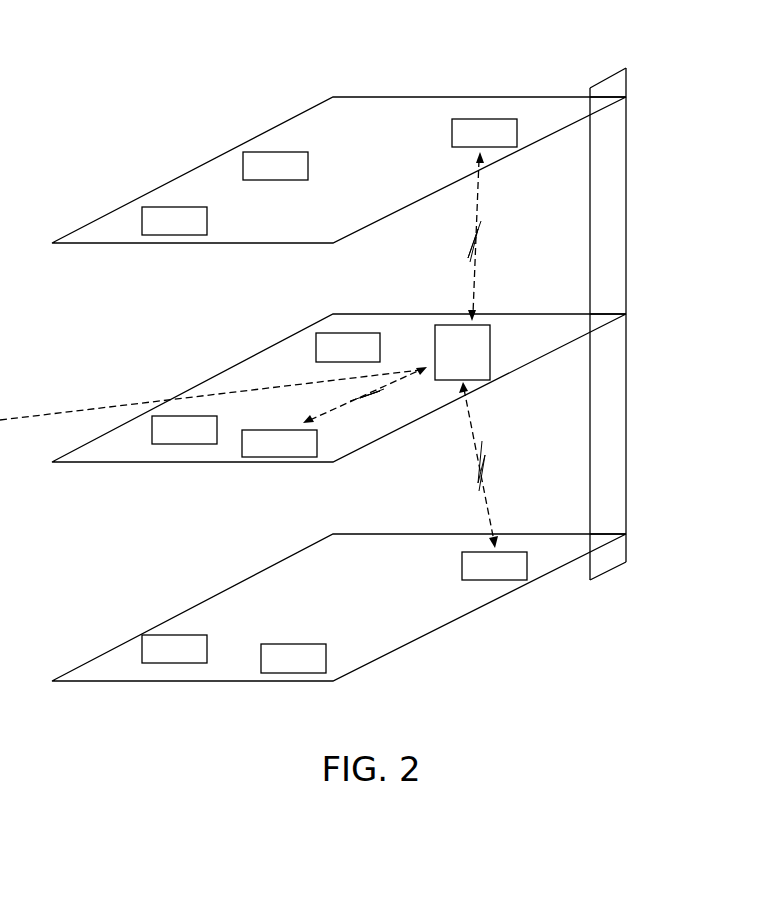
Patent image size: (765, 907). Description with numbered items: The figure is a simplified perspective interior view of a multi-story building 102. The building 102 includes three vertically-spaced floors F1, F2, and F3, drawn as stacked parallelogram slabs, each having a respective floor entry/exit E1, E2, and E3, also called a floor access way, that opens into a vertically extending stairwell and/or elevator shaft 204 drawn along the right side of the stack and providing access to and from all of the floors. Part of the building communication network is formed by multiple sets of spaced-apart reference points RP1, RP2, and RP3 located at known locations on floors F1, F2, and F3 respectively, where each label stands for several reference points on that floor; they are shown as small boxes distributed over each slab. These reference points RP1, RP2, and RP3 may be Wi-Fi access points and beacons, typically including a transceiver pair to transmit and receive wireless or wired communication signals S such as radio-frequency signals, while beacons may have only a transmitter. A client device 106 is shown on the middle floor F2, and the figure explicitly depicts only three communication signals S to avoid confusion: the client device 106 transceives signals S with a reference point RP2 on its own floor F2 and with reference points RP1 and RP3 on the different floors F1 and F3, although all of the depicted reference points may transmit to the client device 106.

The multi-story building 102 is at (313, 34).
The stairwell and/or elevator shaft 204 is at (607, 78).
The client device 106 is at (480, 374).
The floor entry/exit E1 is at (596, 541).
The floor entry/exit E2 is at (596, 320).
The floor entry/exit E3 is at (603, 100).
The floor F1 is at (110, 651).
The floor F2 is at (110, 432).
The floor F3 is at (100, 217).
The reference points RP1 is at (334, 612).
The reference points RP2 is at (266, 395).
The reference points RP3 is at (329, 177).
The communication signals S is at (476, 197).